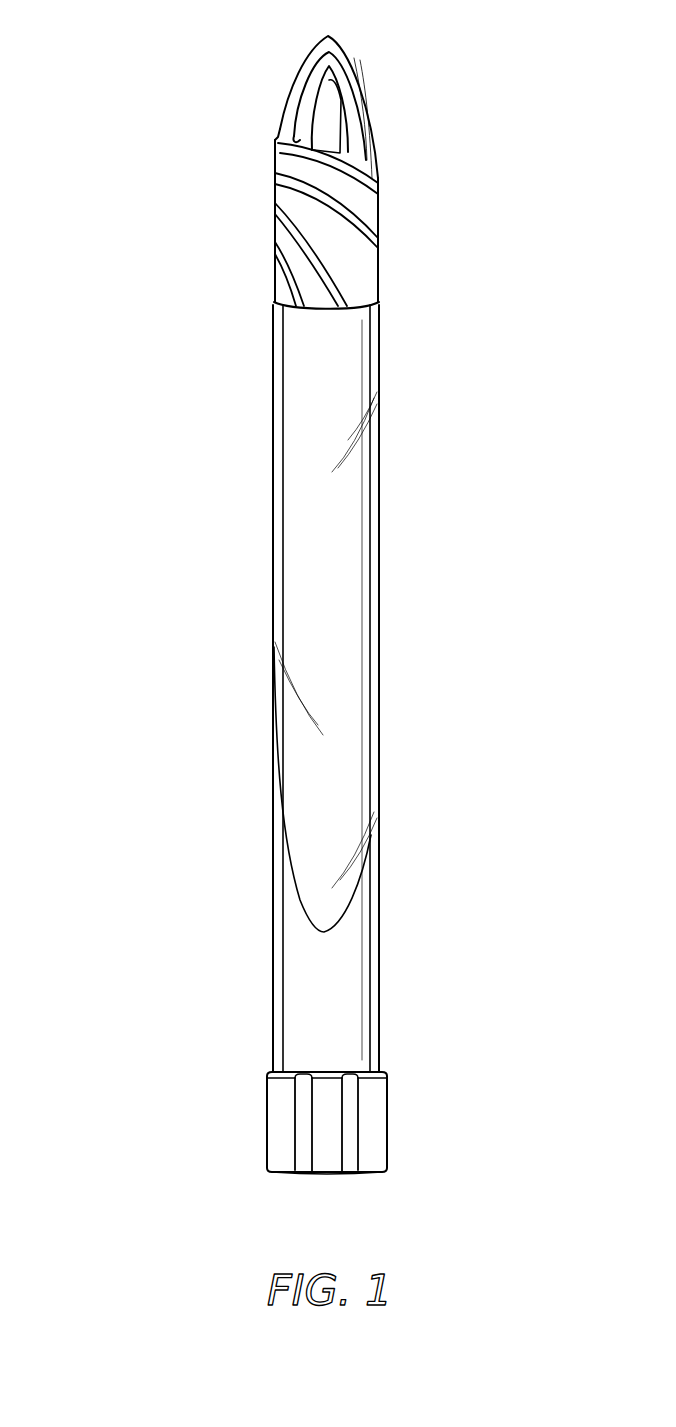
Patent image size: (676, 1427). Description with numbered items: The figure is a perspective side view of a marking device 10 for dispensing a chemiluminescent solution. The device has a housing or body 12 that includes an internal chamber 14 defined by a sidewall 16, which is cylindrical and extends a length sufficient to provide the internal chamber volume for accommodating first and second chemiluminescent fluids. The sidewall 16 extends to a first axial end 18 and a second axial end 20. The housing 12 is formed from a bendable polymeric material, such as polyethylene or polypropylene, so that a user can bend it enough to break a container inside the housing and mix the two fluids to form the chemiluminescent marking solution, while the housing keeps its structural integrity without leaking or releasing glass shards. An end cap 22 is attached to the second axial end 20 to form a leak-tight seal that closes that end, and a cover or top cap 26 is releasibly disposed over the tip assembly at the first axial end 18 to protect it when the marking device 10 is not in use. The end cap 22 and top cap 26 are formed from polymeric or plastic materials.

The marking device 10 is at (121, 196).
The housing 12 is at (296, 646).
The internal chamber 14 is at (372, 676).
The sidewall 16 is at (325, 773).
The first axial end 18 is at (282, 307).
The second axial end 20 is at (372, 1133).
The end cap 22 is at (278, 1170).
The top cap 26 is at (283, 185).